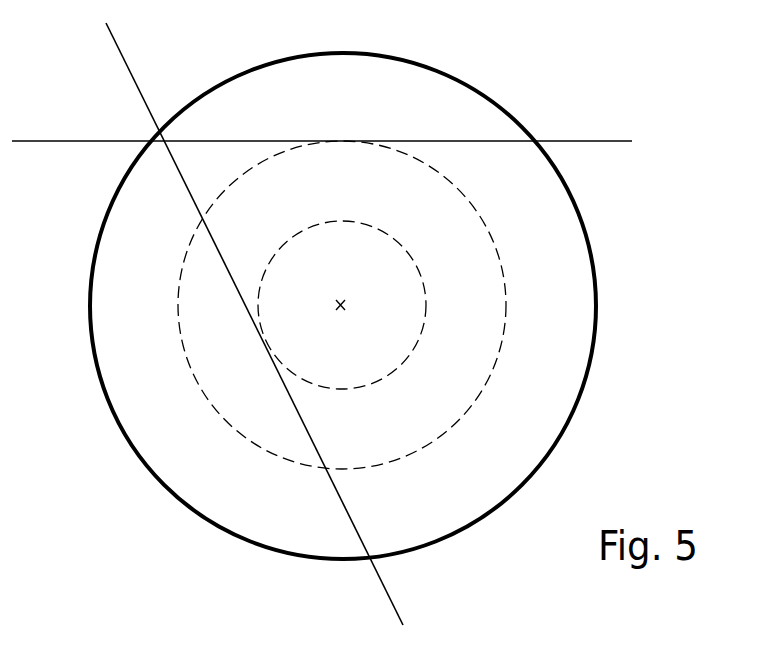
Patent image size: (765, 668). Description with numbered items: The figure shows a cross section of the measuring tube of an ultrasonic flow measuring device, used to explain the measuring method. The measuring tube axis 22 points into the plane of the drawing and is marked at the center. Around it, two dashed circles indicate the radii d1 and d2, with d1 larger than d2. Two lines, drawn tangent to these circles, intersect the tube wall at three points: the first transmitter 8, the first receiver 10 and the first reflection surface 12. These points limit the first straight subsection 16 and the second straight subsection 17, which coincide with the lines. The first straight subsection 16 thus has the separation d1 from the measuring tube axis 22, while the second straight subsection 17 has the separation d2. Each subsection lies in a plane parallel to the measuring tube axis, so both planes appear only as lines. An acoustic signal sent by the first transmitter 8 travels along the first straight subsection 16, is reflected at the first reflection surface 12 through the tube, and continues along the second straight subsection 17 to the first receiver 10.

The first transmitter 8 is at (532, 142).
The first receiver 10 is at (357, 528).
The first reflection surface 12 is at (165, 140).
The first straight subsection 16 is at (428, 140).
The second straight subsection 17 is at (342, 305).
The measuring tube axis 22 is at (341, 293).
The first separation d1 is at (342, 143).
The second separation d2 is at (265, 343).